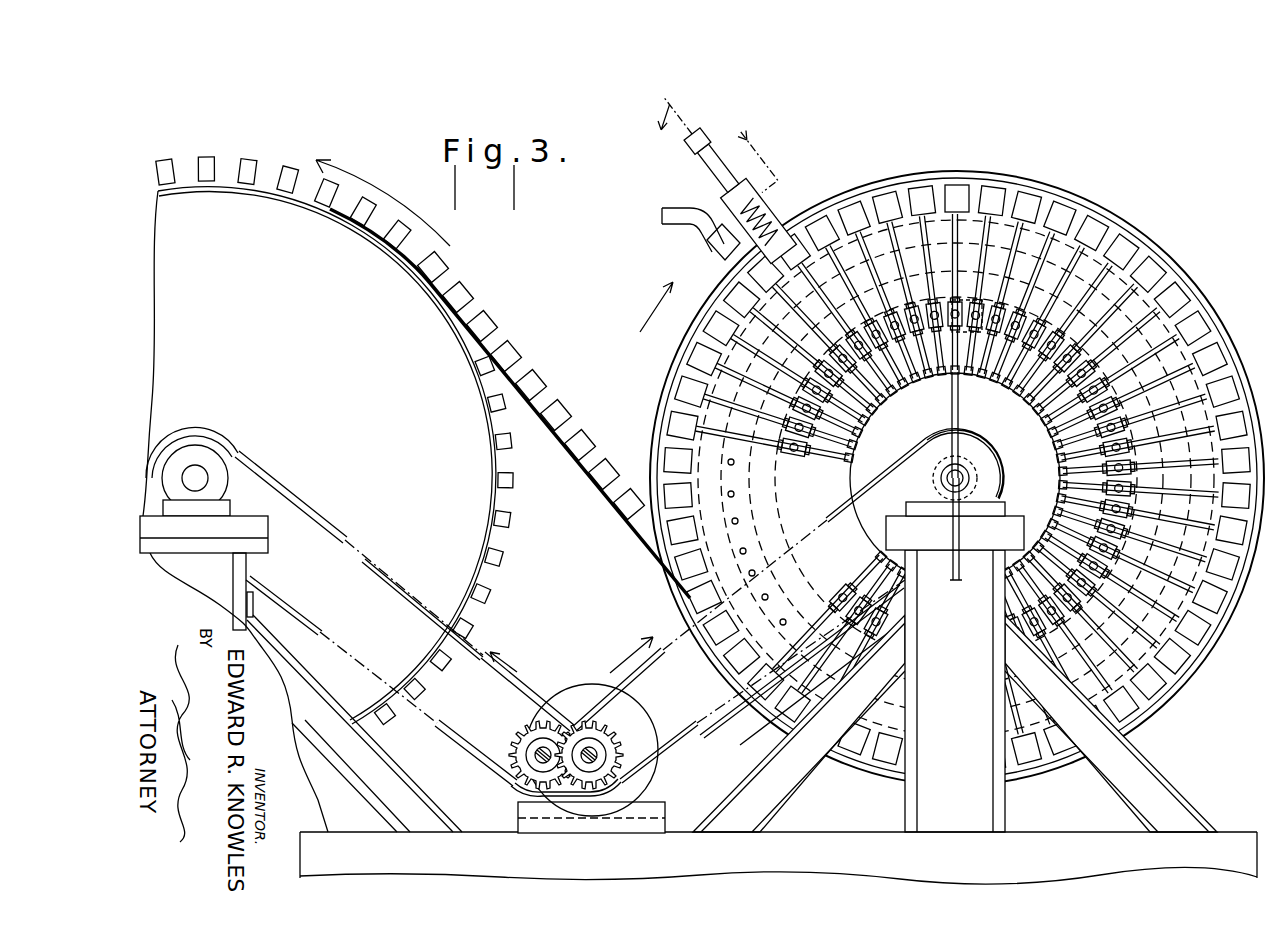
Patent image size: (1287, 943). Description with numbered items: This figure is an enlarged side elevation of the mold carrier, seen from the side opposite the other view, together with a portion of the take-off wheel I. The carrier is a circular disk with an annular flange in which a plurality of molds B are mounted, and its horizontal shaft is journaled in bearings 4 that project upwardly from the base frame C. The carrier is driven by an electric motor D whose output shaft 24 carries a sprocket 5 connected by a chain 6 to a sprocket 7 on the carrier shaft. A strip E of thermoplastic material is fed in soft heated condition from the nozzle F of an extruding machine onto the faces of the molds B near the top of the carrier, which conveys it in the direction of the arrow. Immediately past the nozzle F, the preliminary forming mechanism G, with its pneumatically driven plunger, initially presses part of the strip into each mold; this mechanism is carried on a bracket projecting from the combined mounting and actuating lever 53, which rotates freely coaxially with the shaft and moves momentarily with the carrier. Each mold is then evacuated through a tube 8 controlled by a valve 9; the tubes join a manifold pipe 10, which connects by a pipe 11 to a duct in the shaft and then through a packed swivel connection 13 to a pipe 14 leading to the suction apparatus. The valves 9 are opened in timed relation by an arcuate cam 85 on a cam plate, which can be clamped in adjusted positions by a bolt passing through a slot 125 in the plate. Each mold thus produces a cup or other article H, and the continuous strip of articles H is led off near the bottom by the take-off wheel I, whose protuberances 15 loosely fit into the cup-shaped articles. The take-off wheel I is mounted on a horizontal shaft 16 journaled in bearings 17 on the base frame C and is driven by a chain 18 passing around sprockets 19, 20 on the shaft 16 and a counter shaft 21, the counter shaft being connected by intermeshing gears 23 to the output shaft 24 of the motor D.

The bearings 4 is at (980, 492).
The sprocket 5 is at (612, 718).
The chain 6 is at (680, 742).
The sprocket 7 is at (917, 477).
The tube 8 is at (1050, 253).
The valve 9 is at (787, 453).
The manifold pipe 10 is at (1020, 385).
The pipe 11 is at (960, 395).
The packed swivel connection 13 is at (962, 474).
The pipe 14 is at (960, 562).
The slot 125 is at (922, 622).
The protuberances 15 is at (497, 522).
The horizontal shaft 16 is at (200, 478).
The bearings 17 is at (230, 483).
The chain 18 is at (330, 535).
The sprocket 19 is at (241, 503).
The sprocket 20 is at (520, 740).
The counter shaft 21 is at (540, 765).
The intermeshing gears 23 is at (592, 810).
The output shaft 24 is at (630, 767).
The combined mounting and actuating first element or lever 53 is at (778, 215).
The arcuate cam 85 is at (968, 328).
The molds B is at (683, 388).
The base frame C is at (1055, 831).
The electric motor D is at (570, 697).
The strip of thermoplastic material E is at (577, 470).
The nozzle F is at (688, 246).
The preliminary forming mechanism G is at (721, 201).
The cup or other article H is at (533, 380).
The take-off wheel I is at (415, 308).